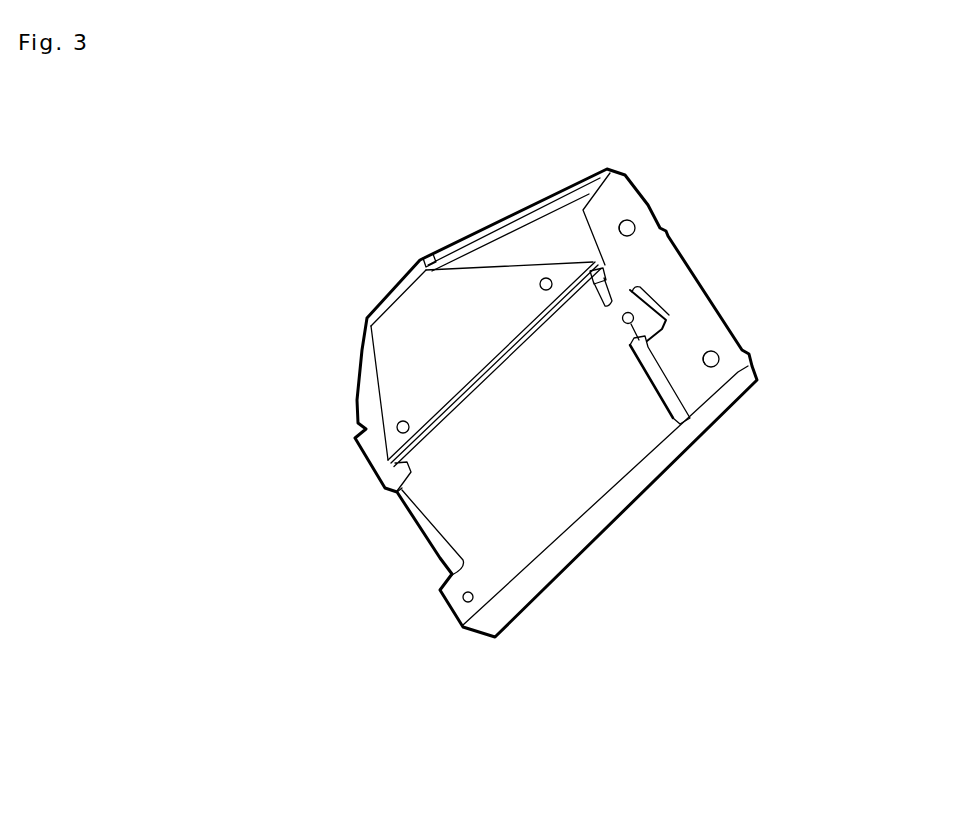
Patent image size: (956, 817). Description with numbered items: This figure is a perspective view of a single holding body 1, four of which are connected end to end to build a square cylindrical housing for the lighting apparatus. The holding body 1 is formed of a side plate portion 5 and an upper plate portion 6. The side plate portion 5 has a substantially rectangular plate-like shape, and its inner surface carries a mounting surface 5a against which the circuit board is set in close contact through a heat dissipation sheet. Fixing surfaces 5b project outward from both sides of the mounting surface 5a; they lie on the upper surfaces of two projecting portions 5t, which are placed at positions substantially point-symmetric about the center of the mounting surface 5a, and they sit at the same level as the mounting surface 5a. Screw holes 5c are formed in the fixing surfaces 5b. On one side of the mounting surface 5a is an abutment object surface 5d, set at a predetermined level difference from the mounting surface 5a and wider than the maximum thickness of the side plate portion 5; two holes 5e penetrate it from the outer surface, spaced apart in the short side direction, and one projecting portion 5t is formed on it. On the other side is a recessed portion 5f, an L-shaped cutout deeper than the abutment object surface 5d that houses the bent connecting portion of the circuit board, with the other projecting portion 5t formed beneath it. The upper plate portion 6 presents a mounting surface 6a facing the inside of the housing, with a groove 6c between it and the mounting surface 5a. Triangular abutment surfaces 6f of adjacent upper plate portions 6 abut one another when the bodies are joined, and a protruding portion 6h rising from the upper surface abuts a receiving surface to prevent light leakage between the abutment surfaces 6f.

The holding body 1 is at (520, 627).
The side plate portion 5 is at (650, 504).
The mounting surface 5a is at (577, 475).
The fixing surface 5b is at (645, 288).
The screw hole 5c is at (460, 595).
The abutment object surface 5d is at (643, 260).
The hole 5e is at (653, 203).
The recessed portion 5f is at (418, 508).
The projecting portion 5t is at (657, 303).
The upper plate portion 6 is at (391, 277).
The mounting surface 6a is at (412, 333).
The groove 6c is at (457, 403).
The abutment surface 6f is at (487, 258).
The protruding portion 6h is at (483, 232).